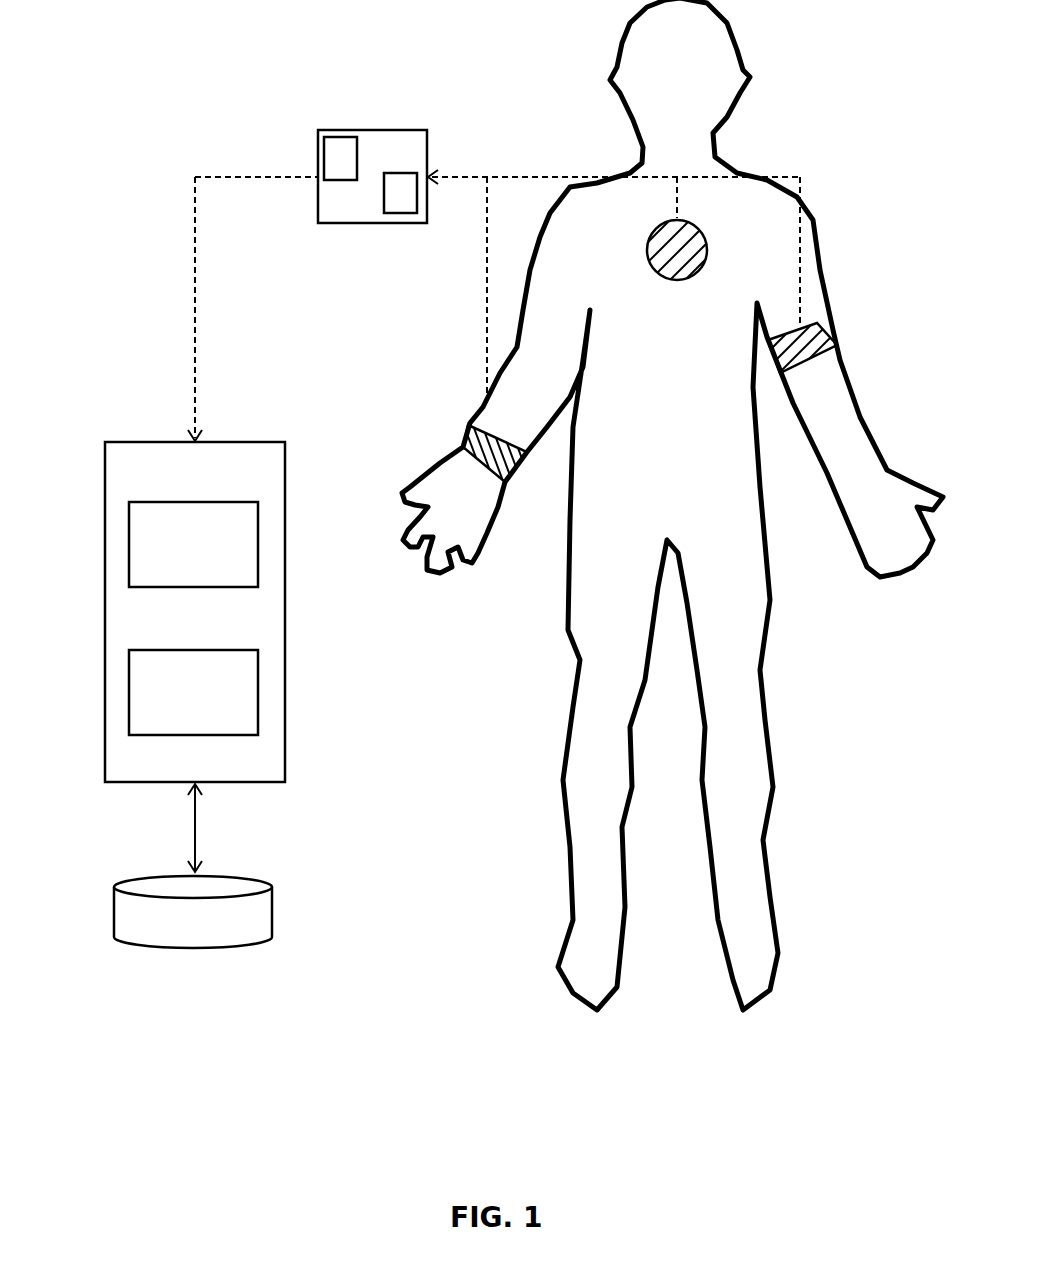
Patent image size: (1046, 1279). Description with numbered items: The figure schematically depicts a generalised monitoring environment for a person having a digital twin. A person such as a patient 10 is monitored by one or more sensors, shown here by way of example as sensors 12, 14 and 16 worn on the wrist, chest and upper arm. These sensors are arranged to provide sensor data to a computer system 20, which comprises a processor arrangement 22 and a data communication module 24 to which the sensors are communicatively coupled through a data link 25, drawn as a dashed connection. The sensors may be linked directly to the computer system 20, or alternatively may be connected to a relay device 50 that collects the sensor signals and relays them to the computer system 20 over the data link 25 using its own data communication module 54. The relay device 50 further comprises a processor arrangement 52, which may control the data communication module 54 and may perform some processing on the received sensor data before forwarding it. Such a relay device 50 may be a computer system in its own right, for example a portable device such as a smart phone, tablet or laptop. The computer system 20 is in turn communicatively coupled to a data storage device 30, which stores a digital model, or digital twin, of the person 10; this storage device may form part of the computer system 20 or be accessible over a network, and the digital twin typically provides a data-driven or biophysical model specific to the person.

The patient 10 is at (693, 1094).
The sensor 12 is at (468, 433).
The sensor 14 is at (665, 246).
The sensor 16 is at (835, 337).
The computer system 20 is at (257, 441).
The processor arrangement 22 is at (150, 549).
The data communication module 24 is at (145, 693).
The data link 25 is at (254, 177).
The data storage device 30 is at (198, 925).
The relay device 50 is at (410, 130).
The processor arrangement 52 is at (342, 150).
The data communication module 54 is at (401, 206).